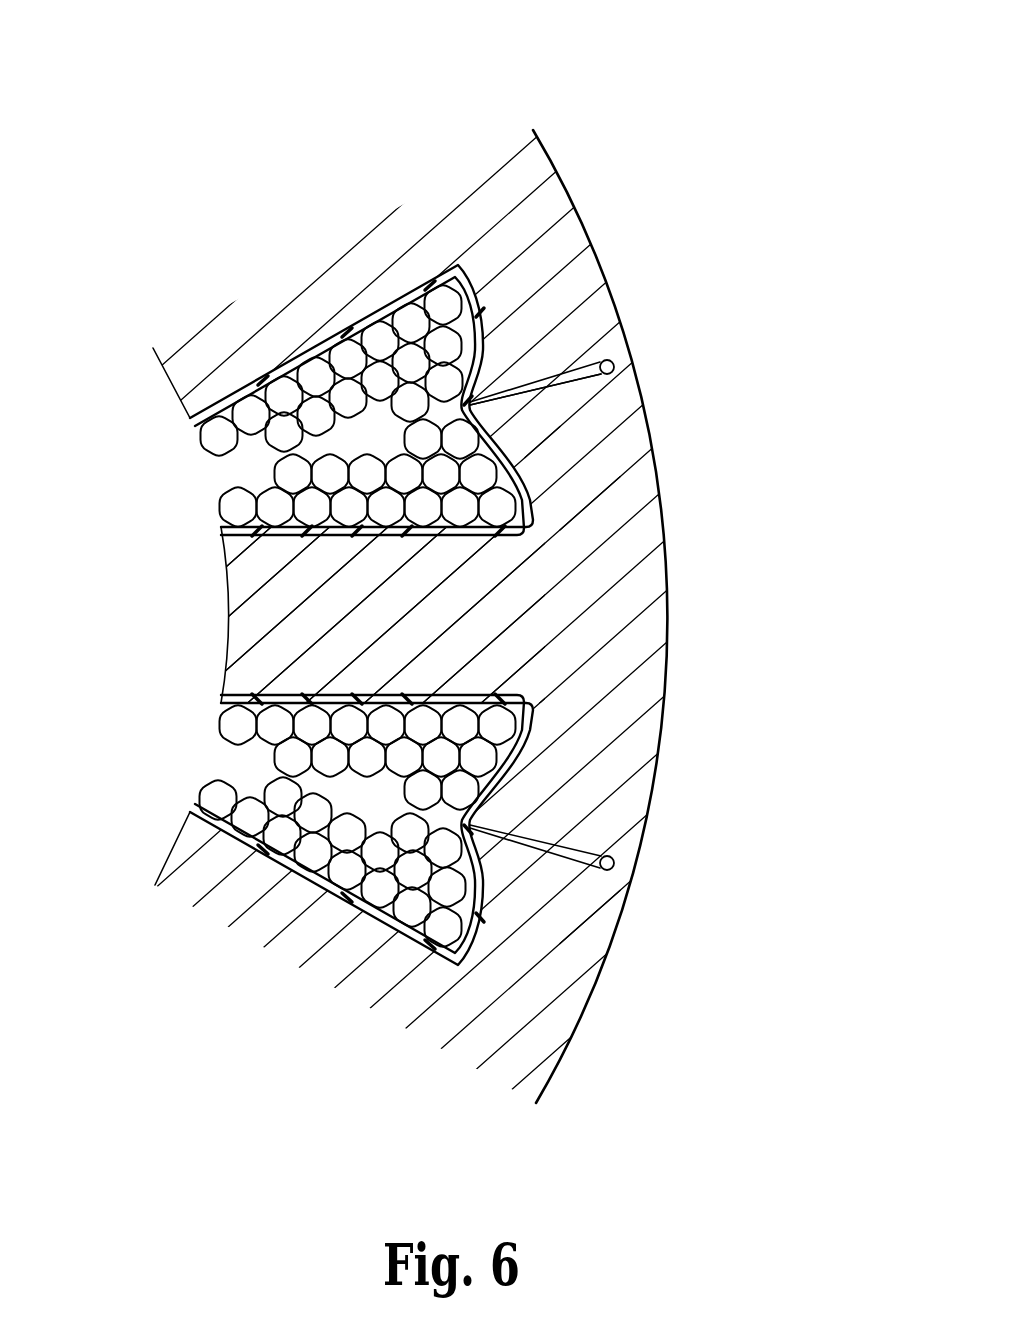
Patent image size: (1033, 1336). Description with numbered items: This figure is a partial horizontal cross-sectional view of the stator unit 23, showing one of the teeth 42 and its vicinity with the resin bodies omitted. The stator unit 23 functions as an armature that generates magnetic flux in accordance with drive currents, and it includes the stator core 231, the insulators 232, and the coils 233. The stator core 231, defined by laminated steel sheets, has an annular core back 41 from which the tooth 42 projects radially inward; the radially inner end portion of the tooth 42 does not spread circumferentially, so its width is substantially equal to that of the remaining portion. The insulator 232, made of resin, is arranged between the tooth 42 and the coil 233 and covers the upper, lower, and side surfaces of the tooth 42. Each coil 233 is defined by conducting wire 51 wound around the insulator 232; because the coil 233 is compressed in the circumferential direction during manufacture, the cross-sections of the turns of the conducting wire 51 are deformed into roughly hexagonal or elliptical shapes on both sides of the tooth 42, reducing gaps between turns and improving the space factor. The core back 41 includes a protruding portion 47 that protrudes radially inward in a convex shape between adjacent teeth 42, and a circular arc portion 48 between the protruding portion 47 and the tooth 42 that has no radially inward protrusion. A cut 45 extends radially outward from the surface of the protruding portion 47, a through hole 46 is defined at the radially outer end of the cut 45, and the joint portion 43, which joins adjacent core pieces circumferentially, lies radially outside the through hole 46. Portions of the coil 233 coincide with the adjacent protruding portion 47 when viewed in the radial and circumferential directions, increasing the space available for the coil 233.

The stator unit 23 is at (465, 668).
The stator core 231 is at (686, 656).
The insulator 232 is at (281, 533).
The coil 233 is at (257, 752).
The core back 41 is at (593, 940).
The tooth 42 is at (267, 615).
The joint portion 43 is at (598, 378).
The cut 45 is at (538, 383).
The through hole 46 is at (601, 360).
The protruding portion 47 is at (513, 437).
The circular arc portion 48 is at (578, 498).
The conducting wire 51 is at (447, 753).